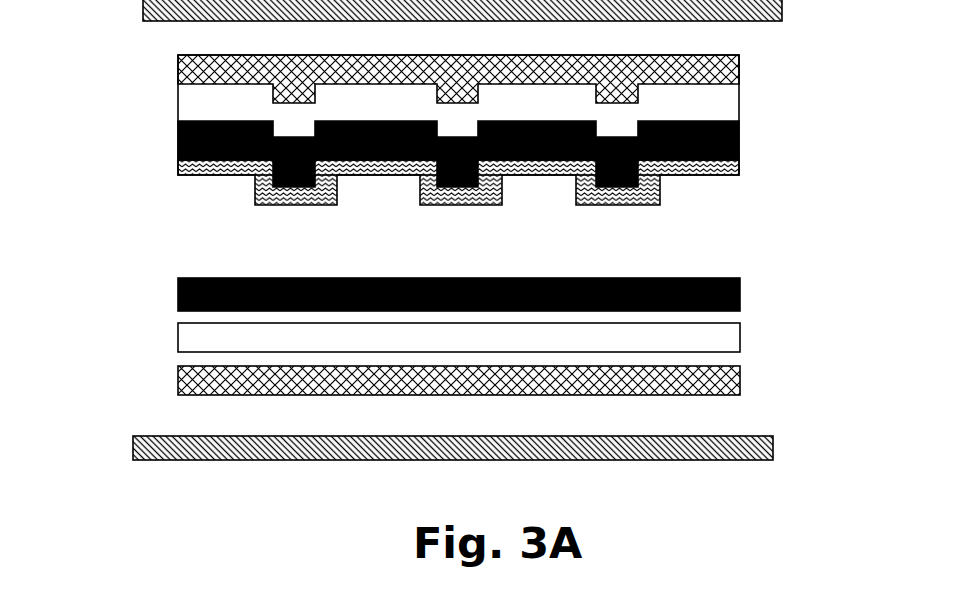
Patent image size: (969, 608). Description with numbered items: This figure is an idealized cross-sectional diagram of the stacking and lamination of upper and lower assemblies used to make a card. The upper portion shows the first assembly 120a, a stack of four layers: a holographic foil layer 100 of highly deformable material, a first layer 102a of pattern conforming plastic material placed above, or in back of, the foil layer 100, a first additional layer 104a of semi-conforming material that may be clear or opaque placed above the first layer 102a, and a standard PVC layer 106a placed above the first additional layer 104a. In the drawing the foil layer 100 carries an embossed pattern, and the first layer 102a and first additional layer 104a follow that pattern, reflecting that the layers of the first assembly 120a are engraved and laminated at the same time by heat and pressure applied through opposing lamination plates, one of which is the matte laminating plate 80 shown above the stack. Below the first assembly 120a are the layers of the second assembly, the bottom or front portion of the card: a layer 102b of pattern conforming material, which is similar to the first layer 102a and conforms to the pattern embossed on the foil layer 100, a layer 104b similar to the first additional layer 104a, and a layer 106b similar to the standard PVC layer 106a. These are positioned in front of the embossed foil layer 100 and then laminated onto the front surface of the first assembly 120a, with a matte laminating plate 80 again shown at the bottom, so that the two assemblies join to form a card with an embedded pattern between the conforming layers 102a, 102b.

The matte laminating plate 80 is at (143, 8).
The foil layer 100 is at (376, 149).
The first layer 102a is at (177, 140).
The first additional layer 104a is at (177, 88).
The standard PVC layer 106a is at (177, 57).
The first assembly 120a is at (461, 148).
The layer of pattern conforming material 102b is at (177, 297).
The layer 104b is at (740, 337).
The layer 106b is at (177, 382).